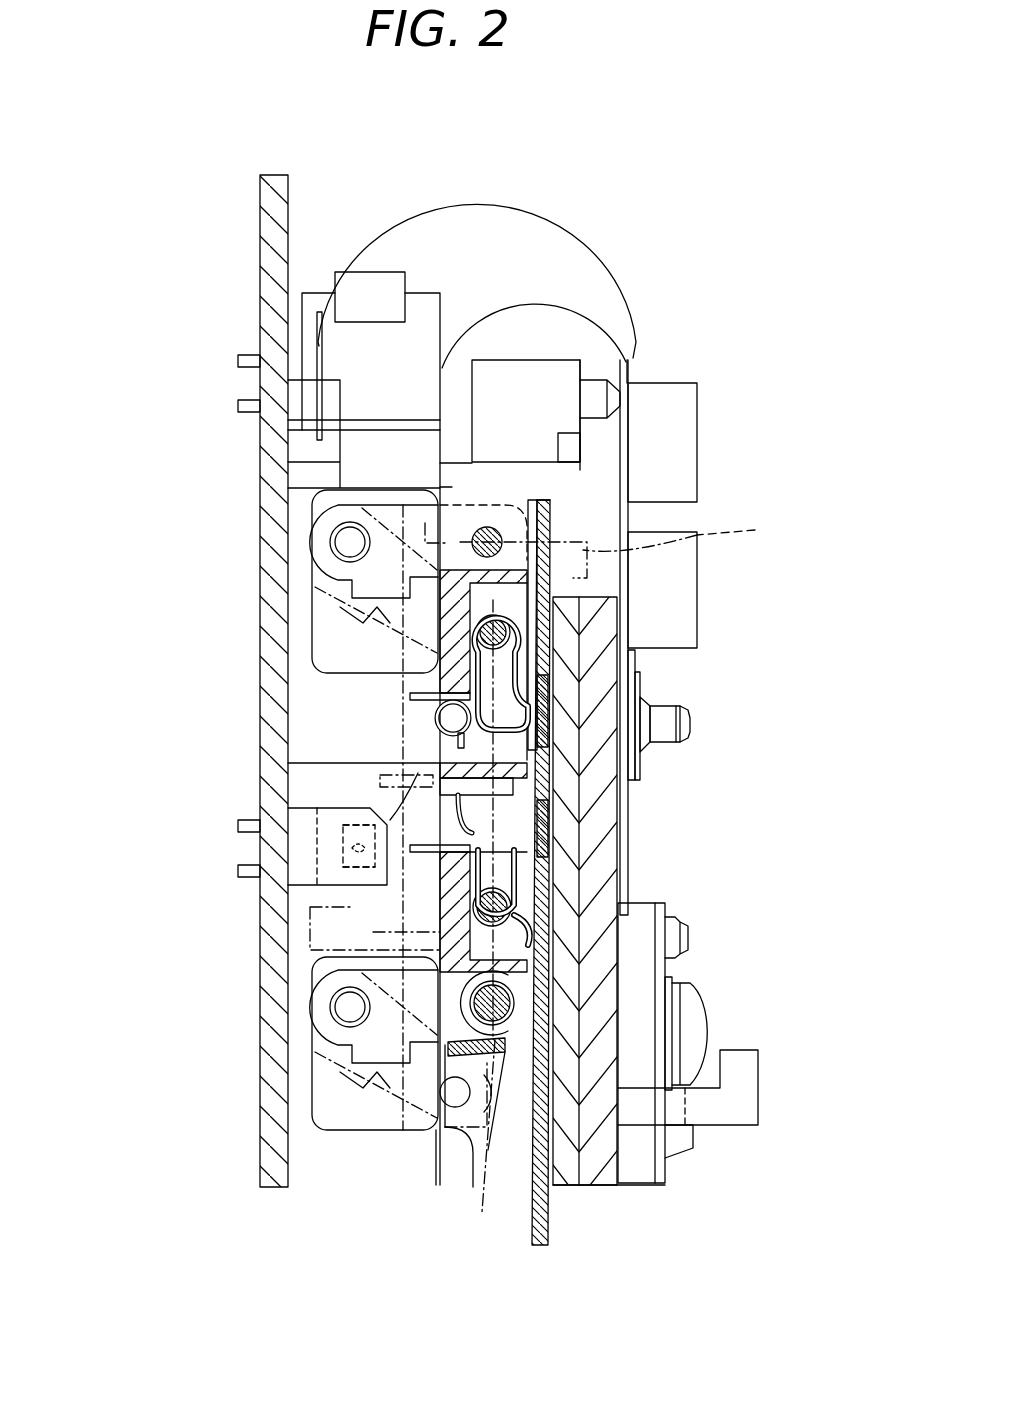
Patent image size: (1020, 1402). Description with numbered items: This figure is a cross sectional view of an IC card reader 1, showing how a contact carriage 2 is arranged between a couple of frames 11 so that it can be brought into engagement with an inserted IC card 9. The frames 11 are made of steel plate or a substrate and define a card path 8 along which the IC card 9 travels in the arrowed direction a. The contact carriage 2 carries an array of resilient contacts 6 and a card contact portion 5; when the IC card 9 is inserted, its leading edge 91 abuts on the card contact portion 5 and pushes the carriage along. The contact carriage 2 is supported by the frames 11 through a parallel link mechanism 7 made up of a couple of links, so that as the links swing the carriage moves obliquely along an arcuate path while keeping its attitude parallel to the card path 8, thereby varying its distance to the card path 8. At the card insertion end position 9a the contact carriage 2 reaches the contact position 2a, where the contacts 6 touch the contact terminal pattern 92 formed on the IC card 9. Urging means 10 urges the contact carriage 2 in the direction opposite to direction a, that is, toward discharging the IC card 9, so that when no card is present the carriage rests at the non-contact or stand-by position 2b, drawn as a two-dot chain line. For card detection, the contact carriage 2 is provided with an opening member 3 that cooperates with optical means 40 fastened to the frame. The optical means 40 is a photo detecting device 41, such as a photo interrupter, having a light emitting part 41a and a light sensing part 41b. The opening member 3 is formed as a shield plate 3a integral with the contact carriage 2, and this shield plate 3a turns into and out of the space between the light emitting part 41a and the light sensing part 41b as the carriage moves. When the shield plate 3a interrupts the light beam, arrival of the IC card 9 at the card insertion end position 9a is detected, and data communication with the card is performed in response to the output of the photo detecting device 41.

The IC card reader 1 is at (170, 190).
The contact carriage 2 is at (448, 470).
The contact position 2a is at (487, 470).
The non-contact position (stand-by position) 2b is at (425, 523).
The opening member 3 is at (345, 788).
The shield plate 3a is at (392, 815).
The card contact portion 5 is at (593, 487).
The resilient contacts 6 is at (548, 833).
The parallel link mechanism 7 is at (328, 612).
The card path 8 is at (520, 1089).
The IC card 9 is at (545, 1228).
The card insertion end position 9a is at (534, 510).
The urging means 10 is at (445, 1150).
The frame 11 is at (268, 1163).
The optical means 40 is at (320, 810).
The photo detecting device 41 is at (345, 858).
The light emitting part 41a is at (140, 862).
The light sensing part 41b is at (131, 862).
The leading edge 91 is at (550, 494).
The contact terminal pattern 92 is at (545, 688).
The direction a is at (815, 1050).